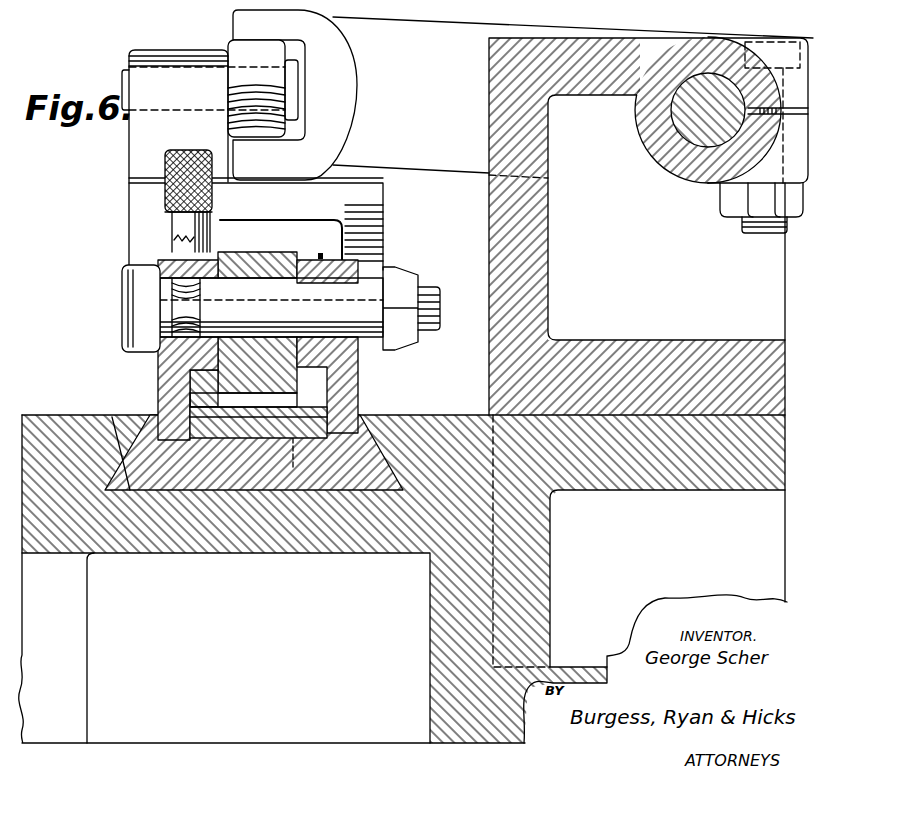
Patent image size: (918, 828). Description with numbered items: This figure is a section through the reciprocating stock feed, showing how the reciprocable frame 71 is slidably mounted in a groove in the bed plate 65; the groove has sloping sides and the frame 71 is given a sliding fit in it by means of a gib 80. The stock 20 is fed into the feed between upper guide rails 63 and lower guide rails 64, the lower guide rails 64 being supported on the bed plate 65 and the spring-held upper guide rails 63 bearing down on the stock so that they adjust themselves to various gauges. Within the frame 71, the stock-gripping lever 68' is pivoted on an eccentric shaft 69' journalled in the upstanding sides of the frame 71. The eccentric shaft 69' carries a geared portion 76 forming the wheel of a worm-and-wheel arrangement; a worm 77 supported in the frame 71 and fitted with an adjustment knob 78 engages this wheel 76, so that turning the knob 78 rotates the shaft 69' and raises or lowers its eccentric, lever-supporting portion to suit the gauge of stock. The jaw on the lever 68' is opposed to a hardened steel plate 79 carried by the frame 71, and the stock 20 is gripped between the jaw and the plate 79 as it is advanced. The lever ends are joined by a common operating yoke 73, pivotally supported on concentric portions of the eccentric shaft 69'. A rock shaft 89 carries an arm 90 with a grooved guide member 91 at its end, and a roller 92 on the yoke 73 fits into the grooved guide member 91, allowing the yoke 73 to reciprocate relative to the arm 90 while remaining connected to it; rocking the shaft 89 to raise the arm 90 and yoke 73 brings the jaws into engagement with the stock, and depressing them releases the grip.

The stock 20 is at (232, 400).
The upper guide rails 63 is at (215, 385).
The lower guide rails 64 is at (185, 425).
The bed plate 65 is at (372, 535).
The lever 68' is at (266, 313).
The eccentric shaft 69' is at (103, 308).
The reciprocable frame 71 is at (218, 478).
The operating yoke 73 is at (148, 155).
The geared portion 76 is at (163, 293).
The worm 77 is at (170, 235).
The adjustment knob 78 is at (165, 190).
The hardened steel plate 79 is at (293, 470).
The gib 80 is at (110, 430).
The rock shaft 89 is at (708, 150).
The arm 90 is at (453, 153).
The grooved guide member 91 is at (348, 82).
The roller 92 is at (247, 57).